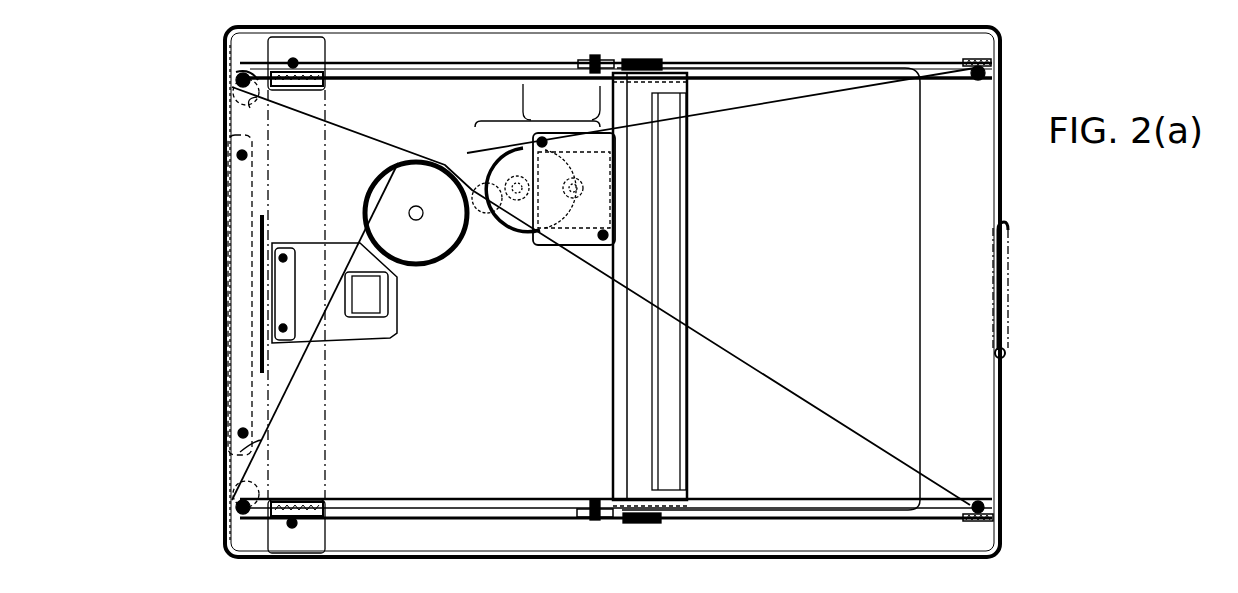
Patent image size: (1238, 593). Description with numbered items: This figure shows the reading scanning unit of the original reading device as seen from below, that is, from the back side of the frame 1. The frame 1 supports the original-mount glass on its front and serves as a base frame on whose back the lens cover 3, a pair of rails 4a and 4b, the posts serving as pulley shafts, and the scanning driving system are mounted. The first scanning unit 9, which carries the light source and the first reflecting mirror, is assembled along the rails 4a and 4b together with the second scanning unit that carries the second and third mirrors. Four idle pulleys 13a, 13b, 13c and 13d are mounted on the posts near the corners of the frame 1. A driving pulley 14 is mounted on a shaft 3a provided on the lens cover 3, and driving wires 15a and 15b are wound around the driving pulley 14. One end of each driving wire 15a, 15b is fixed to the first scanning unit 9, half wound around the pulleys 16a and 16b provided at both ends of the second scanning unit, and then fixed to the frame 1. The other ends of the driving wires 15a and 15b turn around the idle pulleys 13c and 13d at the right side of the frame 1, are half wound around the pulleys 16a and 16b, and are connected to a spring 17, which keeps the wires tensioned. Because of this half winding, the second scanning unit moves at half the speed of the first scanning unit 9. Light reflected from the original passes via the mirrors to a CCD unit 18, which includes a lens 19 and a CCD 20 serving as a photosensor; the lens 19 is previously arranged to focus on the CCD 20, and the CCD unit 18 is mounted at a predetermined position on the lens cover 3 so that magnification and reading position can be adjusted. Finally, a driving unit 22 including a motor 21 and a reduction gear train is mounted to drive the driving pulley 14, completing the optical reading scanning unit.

The frame 1 is at (952, 543).
The lens cover 3 is at (523, 485).
The shaft 3a is at (416, 213).
The rail 4a is at (847, 70).
The rail 4b is at (817, 507).
The first scanning unit 9 is at (307, 543).
The idle pulley 13a is at (230, 86).
The idle pulley 13b is at (230, 508).
The idle pulley 13c is at (995, 54).
The idle pulley 13d is at (1003, 535).
The driving pulley 14 is at (440, 173).
The driving wire 15a is at (250, 108).
The driving wire 15b is at (240, 452).
The pulley 16a is at (650, 58).
The pulley 16b is at (640, 525).
The spring 17 is at (1008, 338).
The CCD unit 18 is at (357, 343).
The lens 19 is at (388, 317).
The CCD 20 is at (262, 278).
The motor 21 is at (597, 163).
The driving unit 22 is at (530, 120).